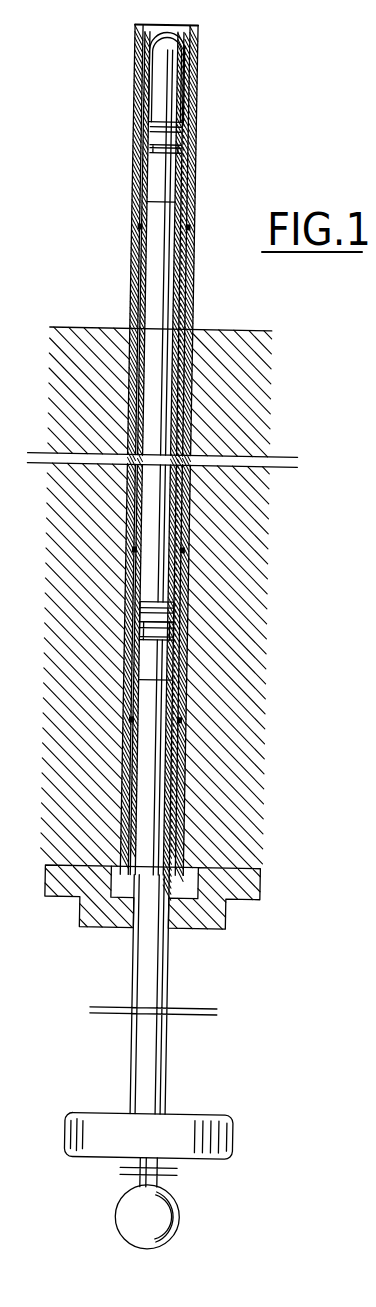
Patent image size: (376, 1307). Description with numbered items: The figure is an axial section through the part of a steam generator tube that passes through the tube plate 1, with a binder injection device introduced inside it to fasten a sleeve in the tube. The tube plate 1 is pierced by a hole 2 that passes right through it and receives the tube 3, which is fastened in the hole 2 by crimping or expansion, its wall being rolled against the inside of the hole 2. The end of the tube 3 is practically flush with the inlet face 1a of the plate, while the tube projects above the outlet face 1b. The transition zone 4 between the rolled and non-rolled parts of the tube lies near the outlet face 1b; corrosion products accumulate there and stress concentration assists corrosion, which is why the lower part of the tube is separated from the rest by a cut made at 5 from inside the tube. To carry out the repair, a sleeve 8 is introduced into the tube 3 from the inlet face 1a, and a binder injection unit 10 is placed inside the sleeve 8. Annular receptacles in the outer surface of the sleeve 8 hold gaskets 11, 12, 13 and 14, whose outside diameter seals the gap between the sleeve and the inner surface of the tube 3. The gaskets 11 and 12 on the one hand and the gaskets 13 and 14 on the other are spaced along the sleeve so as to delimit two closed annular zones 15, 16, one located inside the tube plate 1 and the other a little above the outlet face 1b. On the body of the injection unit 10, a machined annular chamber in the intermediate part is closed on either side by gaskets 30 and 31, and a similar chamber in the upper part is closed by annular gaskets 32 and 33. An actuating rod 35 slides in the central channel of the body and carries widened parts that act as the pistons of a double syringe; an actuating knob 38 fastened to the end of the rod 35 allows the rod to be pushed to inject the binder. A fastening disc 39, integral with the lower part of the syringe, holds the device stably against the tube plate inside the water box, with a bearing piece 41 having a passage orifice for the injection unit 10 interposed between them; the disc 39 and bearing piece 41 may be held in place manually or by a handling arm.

The tube plate 1 is at (256, 346).
The inlet face 1a is at (67, 880).
The outlet face 1b is at (82, 329).
The hole 2 is at (203, 795).
The tube 3 is at (198, 862).
The transition zone 4 is at (202, 319).
The cut 5 is at (140, 25).
The sleeve 8 is at (186, 827).
The binder injection unit 10 is at (183, 757).
The gasket 11 is at (180, 700).
The gasket 12 is at (192, 550).
The gasket 13 is at (196, 228).
The gasket 14 is at (156, 62).
The closed annular zone 15 is at (187, 670).
The closed annular zone 16 is at (147, 122).
The gasket 30 is at (183, 603).
The gasket 31 is at (184, 640).
The annular gasket 32 is at (189, 142).
The annular gasket 33 is at (181, 115).
The actuating rod 35 is at (165, 1180).
The actuating knob 38 is at (186, 1215).
The fastening disc 39 is at (252, 1129).
The bearing piece 41 is at (265, 885).